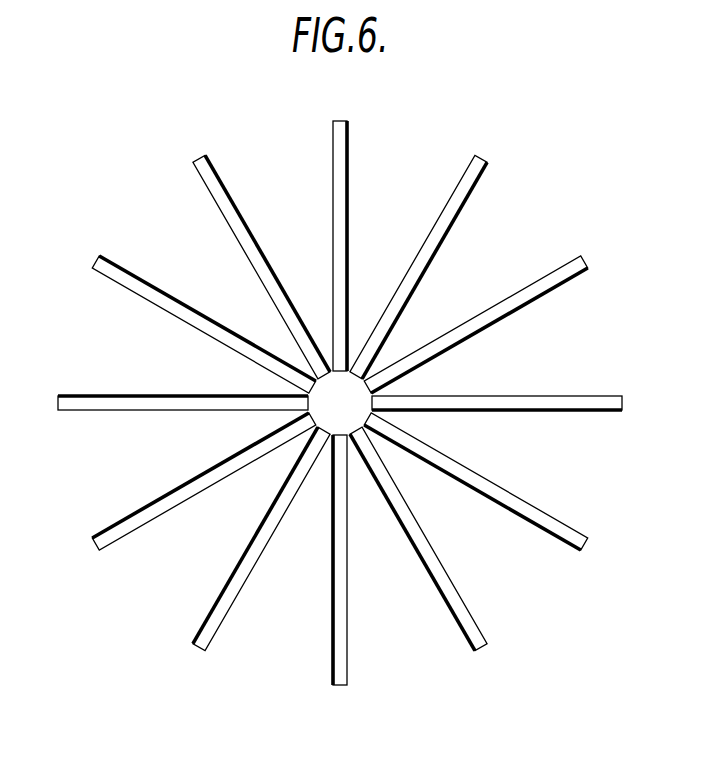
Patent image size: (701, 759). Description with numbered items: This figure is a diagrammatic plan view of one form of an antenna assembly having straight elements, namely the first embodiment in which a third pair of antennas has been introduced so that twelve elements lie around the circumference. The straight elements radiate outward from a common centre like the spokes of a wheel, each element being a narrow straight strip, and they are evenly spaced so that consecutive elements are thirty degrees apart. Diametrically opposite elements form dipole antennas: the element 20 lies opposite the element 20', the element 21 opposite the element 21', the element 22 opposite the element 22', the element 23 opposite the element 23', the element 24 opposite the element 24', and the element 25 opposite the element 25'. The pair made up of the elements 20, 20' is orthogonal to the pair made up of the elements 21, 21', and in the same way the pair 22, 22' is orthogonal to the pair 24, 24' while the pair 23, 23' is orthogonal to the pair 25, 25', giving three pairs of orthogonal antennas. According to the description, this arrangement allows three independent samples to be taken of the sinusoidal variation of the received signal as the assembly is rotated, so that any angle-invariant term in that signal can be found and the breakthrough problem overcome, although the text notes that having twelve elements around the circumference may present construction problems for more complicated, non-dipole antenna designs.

The radial bar 20 is at (337, 226).
The radial bar 20' is at (343, 588).
The radial bar 21 is at (515, 400).
The radial bar 21' is at (161, 395).
The radial bar 22 is at (436, 254).
The radial bar 22' is at (236, 558).
The radial bar 23 is at (493, 493).
The radial bar 23' is at (181, 313).
The radial bar 24 is at (493, 315).
The radial bar 24' is at (179, 489).
The radial bar 25 is at (434, 557).
The radial bar 25' is at (239, 255).